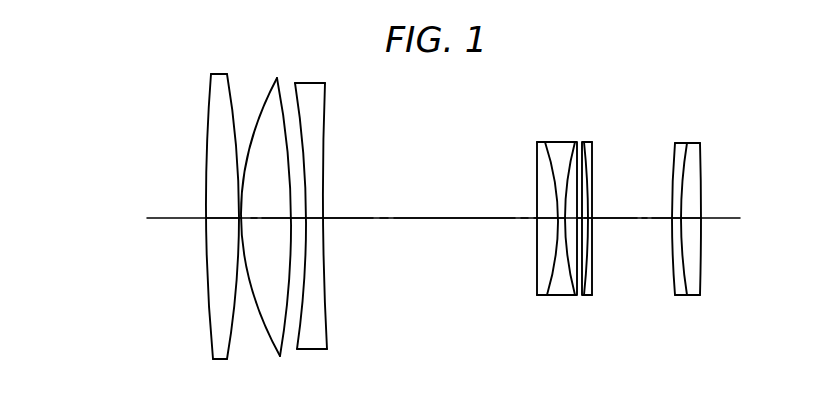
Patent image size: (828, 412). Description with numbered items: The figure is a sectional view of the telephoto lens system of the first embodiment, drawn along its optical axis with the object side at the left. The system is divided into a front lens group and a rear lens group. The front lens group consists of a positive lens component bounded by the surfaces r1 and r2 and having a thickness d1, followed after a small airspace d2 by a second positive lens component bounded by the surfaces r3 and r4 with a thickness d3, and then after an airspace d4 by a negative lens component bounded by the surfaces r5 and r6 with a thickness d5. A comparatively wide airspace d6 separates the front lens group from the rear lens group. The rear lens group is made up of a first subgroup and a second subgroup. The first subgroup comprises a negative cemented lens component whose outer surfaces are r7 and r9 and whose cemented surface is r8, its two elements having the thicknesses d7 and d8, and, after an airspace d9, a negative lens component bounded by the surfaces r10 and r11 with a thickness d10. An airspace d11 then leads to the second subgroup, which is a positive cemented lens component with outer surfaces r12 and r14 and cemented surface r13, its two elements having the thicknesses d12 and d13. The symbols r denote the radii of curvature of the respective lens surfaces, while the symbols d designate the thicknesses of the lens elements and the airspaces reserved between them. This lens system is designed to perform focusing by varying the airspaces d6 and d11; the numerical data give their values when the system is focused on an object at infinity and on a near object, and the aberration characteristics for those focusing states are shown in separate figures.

The radius of curvature of first lens surface r1 is at (212, 346).
The radius of curvature of second lens surface r2 is at (228, 352).
The radius of curvature of third lens surface r3 is at (272, 340).
The radius of curvature of fourth lens surface r4 is at (283, 340).
The radius of curvature of fifth lens surface r5 is at (300, 333).
The radius of curvature of sixth lens surface r6 is at (328, 333).
The radius of curvature of seventh lens surface r7 is at (537, 282).
The radius of curvature of eighth lens surface r8 is at (550, 293).
The radius of curvature of ninth lens surface r9 is at (568, 283).
The radius of curvature of tenth lens surface r10 is at (595, 293).
The radius of curvature of eleventh lens surface r11 is at (590, 283).
The radius of curvature of twelfth lens surface r12 is at (675, 280).
The radius of curvature of thirteenth lens surface r13 is at (692, 293).
The radius of curvature of fourteenth lens surface r14 is at (703, 280).
The thickness of first lens element d1 is at (218, 217).
The airspace between first and second lens components d2 is at (240, 226).
The thickness of second lens element d3 is at (264, 217).
The airspace between second and third lens components d4 is at (298, 218).
The thickness of third lens element d5 is at (312, 217).
The airspace between front and rear lens groups d6 is at (433, 218).
The thickness of fourth lens element d7 is at (548, 217).
The thickness of fifth lens element d8 is at (557, 220).
The airspace between cemented and negative lens components d9 is at (578, 220).
The thickness of sixth lens element d10 is at (588, 217).
The airspace between first and second subgroups d11 is at (652, 220).
The thickness of seventh lens element d12 is at (678, 217).
The thickness of eighth lens element d13 is at (693, 217).